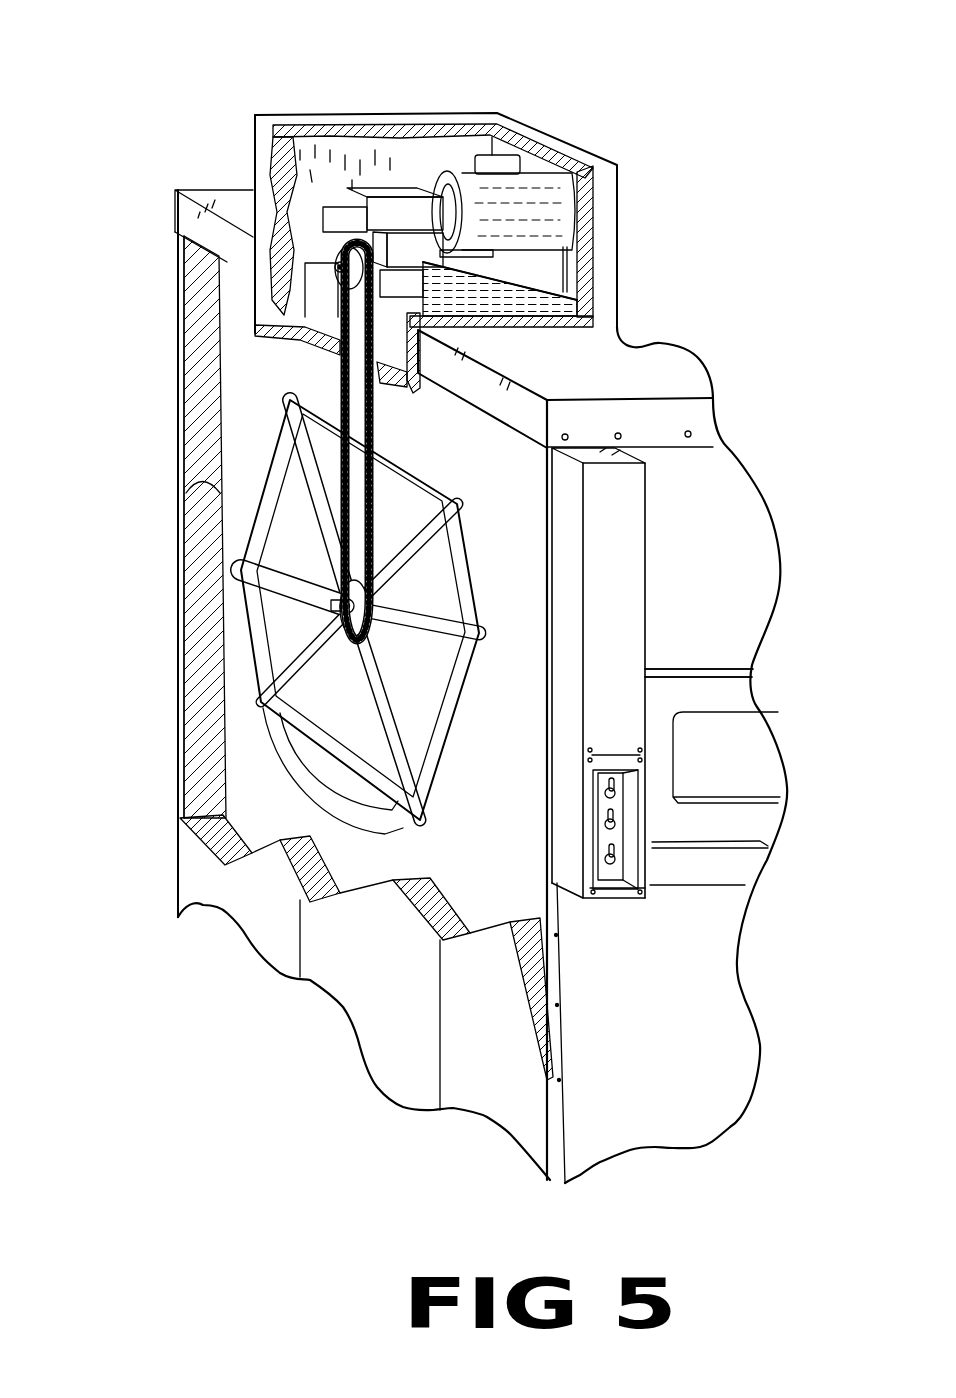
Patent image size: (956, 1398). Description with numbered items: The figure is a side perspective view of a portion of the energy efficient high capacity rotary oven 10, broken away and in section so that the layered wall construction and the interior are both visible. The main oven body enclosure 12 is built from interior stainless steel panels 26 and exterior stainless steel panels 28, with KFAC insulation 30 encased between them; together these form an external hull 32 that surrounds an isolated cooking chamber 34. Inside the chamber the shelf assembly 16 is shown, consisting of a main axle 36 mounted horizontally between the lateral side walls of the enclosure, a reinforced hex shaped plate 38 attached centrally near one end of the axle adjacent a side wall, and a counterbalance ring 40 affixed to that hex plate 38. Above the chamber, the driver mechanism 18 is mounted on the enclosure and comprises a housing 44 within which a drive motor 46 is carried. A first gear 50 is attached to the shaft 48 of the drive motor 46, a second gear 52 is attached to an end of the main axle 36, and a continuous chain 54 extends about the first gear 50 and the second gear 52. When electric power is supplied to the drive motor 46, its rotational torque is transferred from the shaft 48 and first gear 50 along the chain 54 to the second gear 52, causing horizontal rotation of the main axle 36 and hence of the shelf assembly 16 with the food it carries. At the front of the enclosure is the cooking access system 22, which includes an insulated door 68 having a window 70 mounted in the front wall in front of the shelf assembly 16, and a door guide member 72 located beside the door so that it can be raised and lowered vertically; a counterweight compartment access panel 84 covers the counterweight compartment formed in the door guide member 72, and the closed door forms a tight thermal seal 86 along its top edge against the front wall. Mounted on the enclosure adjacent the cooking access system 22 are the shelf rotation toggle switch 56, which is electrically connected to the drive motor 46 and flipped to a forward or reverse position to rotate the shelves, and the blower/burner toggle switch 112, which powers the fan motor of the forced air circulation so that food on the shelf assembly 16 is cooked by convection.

The energy efficient high capacity rotary oven 10 is at (718, 216).
The main oven body enclosure 12 is at (166, 840).
The shelf assembly 16 is at (426, 450).
The driver mechanism 18 is at (514, 110).
The cooking access system 22 is at (681, 660).
The interior stainless steel panels 26 is at (218, 493).
The exterior stainless steel panels 28 is at (176, 387).
The KFAC insulation 30 is at (199, 626).
The external hull 32 is at (213, 933).
The isolated cooking chamber 34 is at (503, 863).
The main axle 36 is at (502, 592).
The reinforced hex shaped plate 38 is at (437, 693).
The counterbalance ring 40 is at (313, 783).
The housing 44 is at (558, 148).
The drive motor 46 is at (574, 184).
The shaft 48 is at (285, 212).
The first gear 50 is at (350, 258).
The second gear 52 is at (346, 643).
The continuous chain 54 is at (341, 400).
The shelf rotation toggle switch 56 is at (617, 848).
The insulated door 68 is at (733, 697).
The window 70 is at (763, 777).
The door guide member 72 is at (658, 565).
The counterweight compartment access panel 84 is at (640, 659).
The tight thermal seal 86 is at (708, 668).
The blower/burner toggle switch 112 is at (612, 818).